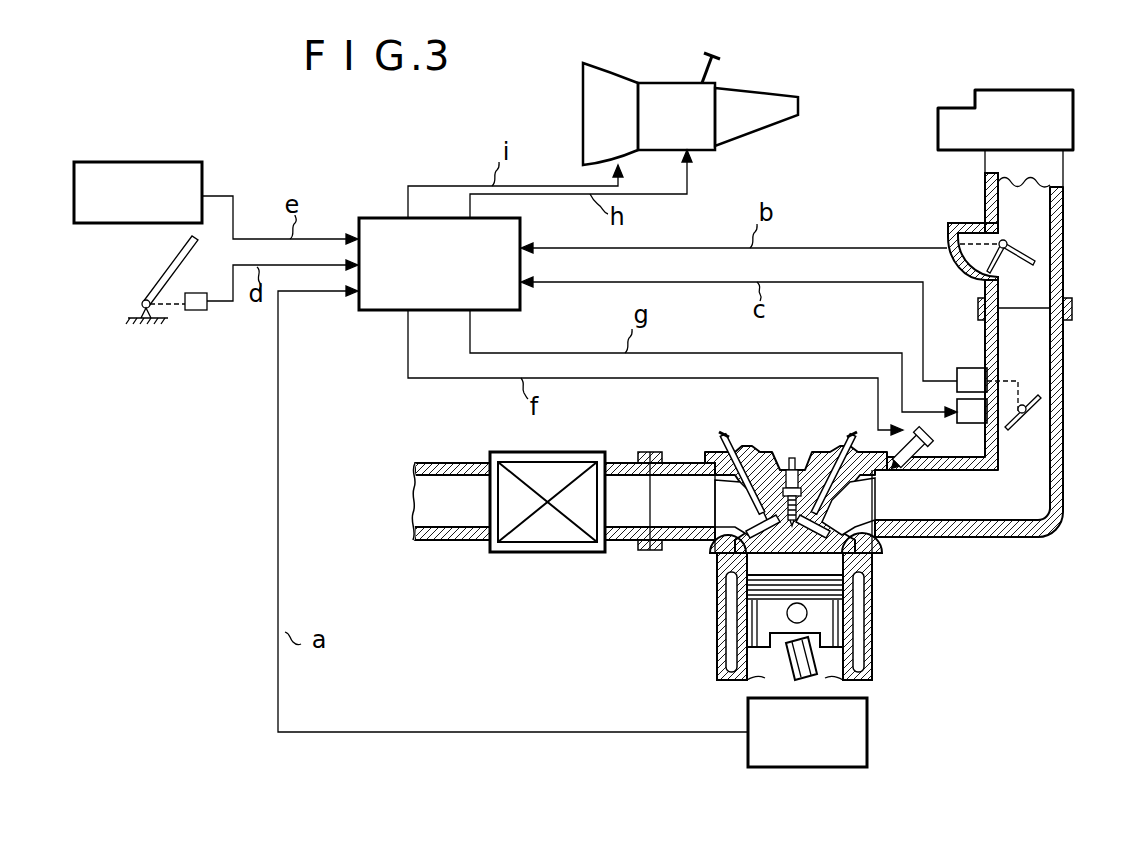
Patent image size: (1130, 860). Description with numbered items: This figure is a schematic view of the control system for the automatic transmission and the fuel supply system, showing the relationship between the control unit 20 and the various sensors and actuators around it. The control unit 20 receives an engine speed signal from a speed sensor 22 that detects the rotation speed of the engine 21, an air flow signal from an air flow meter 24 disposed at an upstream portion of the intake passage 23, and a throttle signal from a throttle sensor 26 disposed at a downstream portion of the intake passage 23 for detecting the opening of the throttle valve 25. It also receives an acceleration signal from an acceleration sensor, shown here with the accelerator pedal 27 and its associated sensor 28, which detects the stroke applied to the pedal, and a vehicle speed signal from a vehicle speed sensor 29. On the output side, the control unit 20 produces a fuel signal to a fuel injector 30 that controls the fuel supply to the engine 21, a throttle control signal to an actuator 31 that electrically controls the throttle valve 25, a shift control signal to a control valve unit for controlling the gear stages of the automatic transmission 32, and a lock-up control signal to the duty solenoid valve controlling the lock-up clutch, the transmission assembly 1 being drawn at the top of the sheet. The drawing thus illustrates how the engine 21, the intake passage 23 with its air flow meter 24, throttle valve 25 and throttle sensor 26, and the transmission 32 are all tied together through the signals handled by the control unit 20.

The automatic transmission 1 is at (596, 107).
The control unit 20 is at (381, 218).
The engine 21 is at (712, 637).
The speed sensor 22 is at (868, 732).
The intake passage 23 is at (1030, 497).
The air flow meter 24 is at (963, 223).
The throttle valve 25 is at (1040, 403).
The throttle sensor 26 is at (967, 368).
The accelerator pedal 27 is at (177, 258).
The accelerator pedal sensor 28 is at (195, 310).
The vehicle speed sensor 29 is at (182, 162).
The fuel injector 30 is at (902, 428).
The actuator 31 is at (975, 423).
The automatic transmission 32 is at (674, 83).